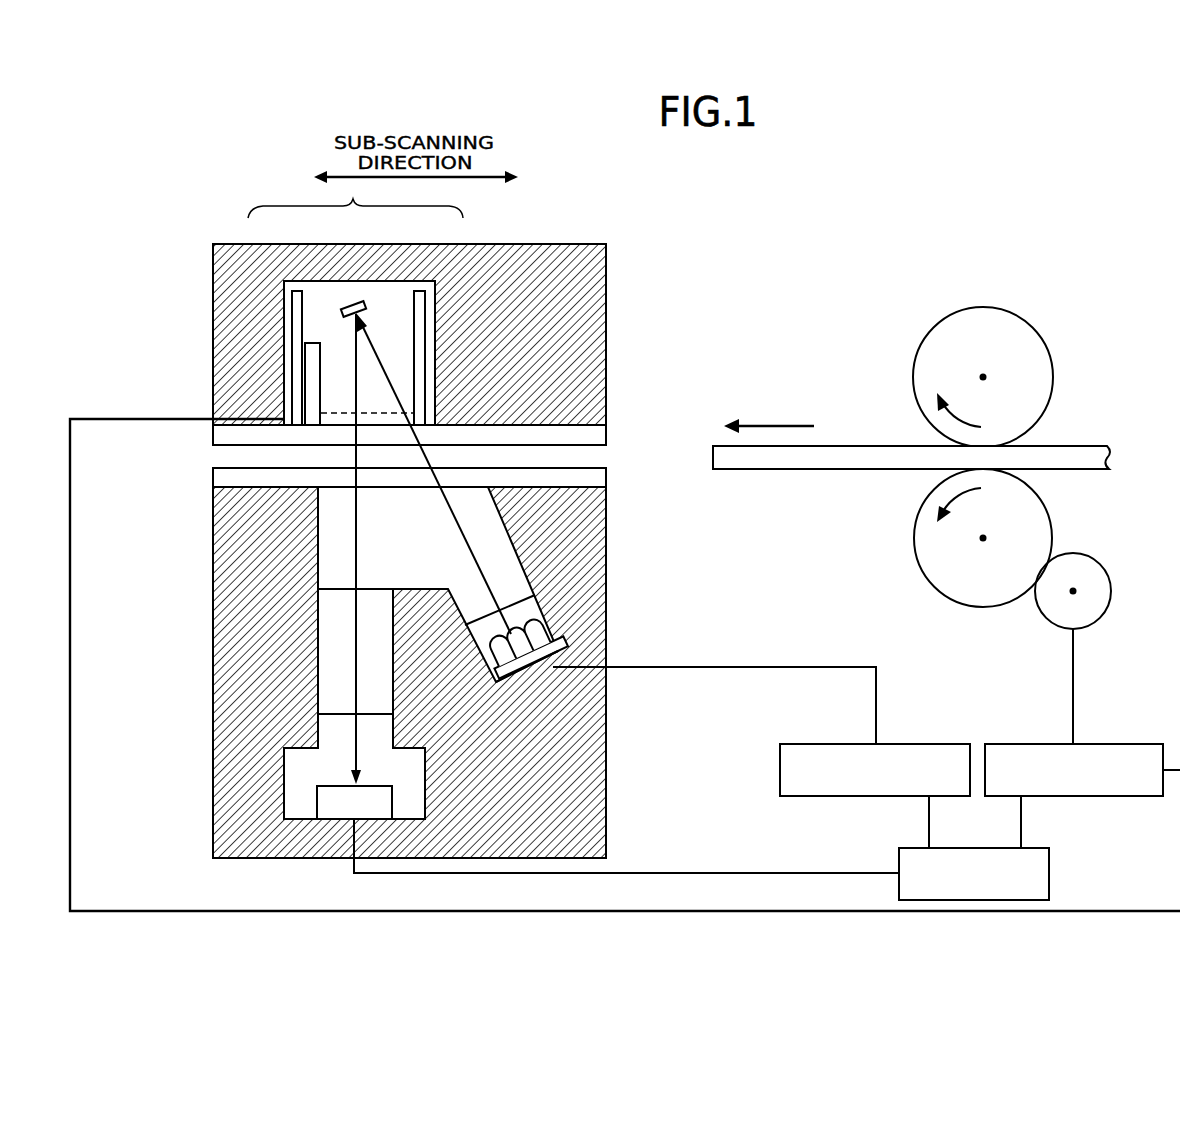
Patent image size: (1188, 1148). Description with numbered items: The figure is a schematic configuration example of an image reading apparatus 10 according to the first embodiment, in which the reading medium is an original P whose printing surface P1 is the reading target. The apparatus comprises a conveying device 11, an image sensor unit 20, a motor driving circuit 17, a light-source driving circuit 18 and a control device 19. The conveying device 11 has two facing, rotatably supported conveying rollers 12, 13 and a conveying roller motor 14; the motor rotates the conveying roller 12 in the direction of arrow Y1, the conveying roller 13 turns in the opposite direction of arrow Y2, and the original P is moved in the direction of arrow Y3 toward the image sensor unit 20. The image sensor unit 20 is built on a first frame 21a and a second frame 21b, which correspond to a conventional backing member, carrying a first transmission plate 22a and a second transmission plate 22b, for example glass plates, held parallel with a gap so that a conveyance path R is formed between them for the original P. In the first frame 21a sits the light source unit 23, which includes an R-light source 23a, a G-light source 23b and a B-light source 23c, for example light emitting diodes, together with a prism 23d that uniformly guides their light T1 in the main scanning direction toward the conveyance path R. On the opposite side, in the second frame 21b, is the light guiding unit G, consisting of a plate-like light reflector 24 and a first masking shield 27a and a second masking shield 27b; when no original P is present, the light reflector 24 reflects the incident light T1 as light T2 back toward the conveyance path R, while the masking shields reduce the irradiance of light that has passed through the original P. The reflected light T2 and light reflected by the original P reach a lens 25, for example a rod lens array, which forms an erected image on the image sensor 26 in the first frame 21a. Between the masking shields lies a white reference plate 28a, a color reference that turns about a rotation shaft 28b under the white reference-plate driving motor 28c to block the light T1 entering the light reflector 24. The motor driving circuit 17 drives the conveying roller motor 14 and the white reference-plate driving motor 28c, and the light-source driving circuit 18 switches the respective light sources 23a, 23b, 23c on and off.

The image reading apparatus 10 is at (1090, 180).
The conveying device 11 is at (1030, 282).
The conveying roller 12 is at (1050, 525).
The conveying roller 13 is at (1040, 332).
The conveying roller motor 14 is at (1110, 587).
The motor driving circuit 17 is at (1117, 742).
The light-source driving circuit 18 is at (908, 742).
The control device 19 is at (1050, 872).
The image sensor unit 20 is at (200, 198).
The first frame 21a is at (212, 577).
The second frame 21b is at (212, 305).
The first transmission plate 22a is at (212, 477).
The second transmission plate 22b is at (212, 437).
The light source unit 23 is at (676, 575).
The R-light source 23a is at (533, 633).
The G-light source 23b is at (552, 646).
The B-light source 23c is at (505, 660).
The prism 23d is at (533, 603).
The light reflector 24 is at (355, 298).
The lens 25 is at (330, 643).
The image sensor 26 is at (317, 803).
The first masking shield 27a is at (293, 285).
The second masking shield 27b is at (419, 288).
The white reference plate 28a is at (313, 352).
The rotation shaft 28b is at (312, 416).
The white reference-plate driving motor 28c is at (313, 419).
The light guiding unit G is at (355, 197).
The conveyance path R is at (570, 453).
The original P is at (1077, 444).
The printing surface P1 is at (805, 470).
The light T1 is at (471, 551).
The light T2 is at (357, 519).
The arrow Y1 is at (933, 488).
The arrow Y2 is at (933, 423).
The arrow Y3 is at (768, 424).